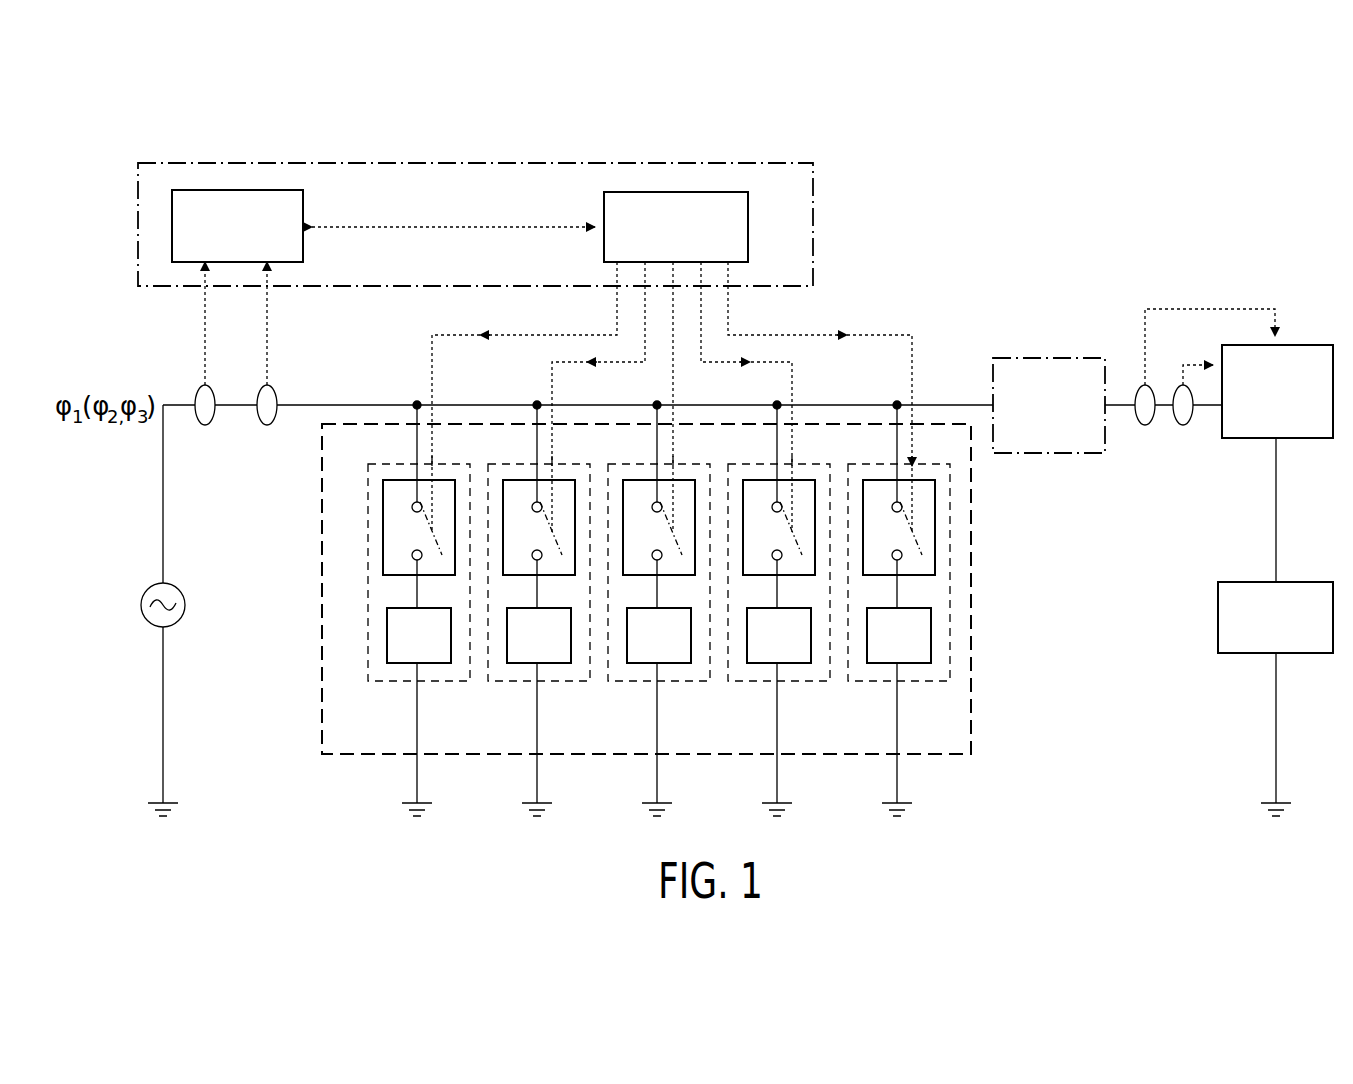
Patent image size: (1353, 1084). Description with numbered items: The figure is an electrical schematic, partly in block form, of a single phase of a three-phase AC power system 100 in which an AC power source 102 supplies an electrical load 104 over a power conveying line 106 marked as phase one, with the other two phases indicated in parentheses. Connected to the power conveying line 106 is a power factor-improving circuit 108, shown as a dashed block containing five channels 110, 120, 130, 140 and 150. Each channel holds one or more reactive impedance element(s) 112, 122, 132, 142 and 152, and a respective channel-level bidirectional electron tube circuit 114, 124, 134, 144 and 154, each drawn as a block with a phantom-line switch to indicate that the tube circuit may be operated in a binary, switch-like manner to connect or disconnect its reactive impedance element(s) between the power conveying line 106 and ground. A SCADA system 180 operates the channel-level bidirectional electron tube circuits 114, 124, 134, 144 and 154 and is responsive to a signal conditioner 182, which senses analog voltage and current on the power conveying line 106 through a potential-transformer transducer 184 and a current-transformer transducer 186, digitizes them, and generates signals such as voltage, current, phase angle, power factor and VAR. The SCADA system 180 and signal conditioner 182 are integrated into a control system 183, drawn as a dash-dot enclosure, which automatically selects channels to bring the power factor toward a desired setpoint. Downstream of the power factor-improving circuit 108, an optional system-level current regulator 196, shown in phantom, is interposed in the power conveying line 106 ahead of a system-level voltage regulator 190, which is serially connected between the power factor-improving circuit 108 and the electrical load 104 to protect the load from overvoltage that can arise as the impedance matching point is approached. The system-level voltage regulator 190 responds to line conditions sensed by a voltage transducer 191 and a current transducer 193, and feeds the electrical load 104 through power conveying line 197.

The AC power system 100 is at (1098, 235).
The AC power source 102 is at (148, 590).
The electrical load 104 is at (1312, 582).
The power conveying line 106 is at (164, 540).
The power factor-improving circuit 108 is at (322, 690).
The channel 110 is at (390, 682).
The reactive impedance element(s) 112 is at (419, 610).
The channel-level bidirectional electron tube circuit 114 is at (398, 480).
The channel 120 is at (510, 682).
The reactive impedance element(s) 122 is at (539, 610).
The channel-level bidirectional electron tube circuit 124 is at (518, 480).
The channel 130 is at (630, 682).
The reactive impedance element(s) 132 is at (659, 610).
The channel-level bidirectional electron tube circuit 134 is at (638, 480).
The channel 140 is at (750, 682).
The reactive impedance element(s) 142 is at (779, 610).
The channel-level bidirectional electron tube circuit 144 is at (758, 480).
The channel 150 is at (870, 682).
The reactive impedance element(s) 152 is at (899, 610).
The channel-level bidirectional electron tube circuit 154 is at (878, 480).
The SCADA system 180 is at (604, 205).
The signal conditioner 182 is at (307, 205).
The control system 183 is at (452, 163).
The transducer 184 is at (200, 387).
The transducer 186 is at (262, 387).
The system-level voltage regulator 190 is at (1320, 345).
The transducer 191 is at (1148, 425).
The transducer 193 is at (1185, 425).
The current regulator 196 is at (1032, 358).
The power conveying line 197 is at (1274, 467).